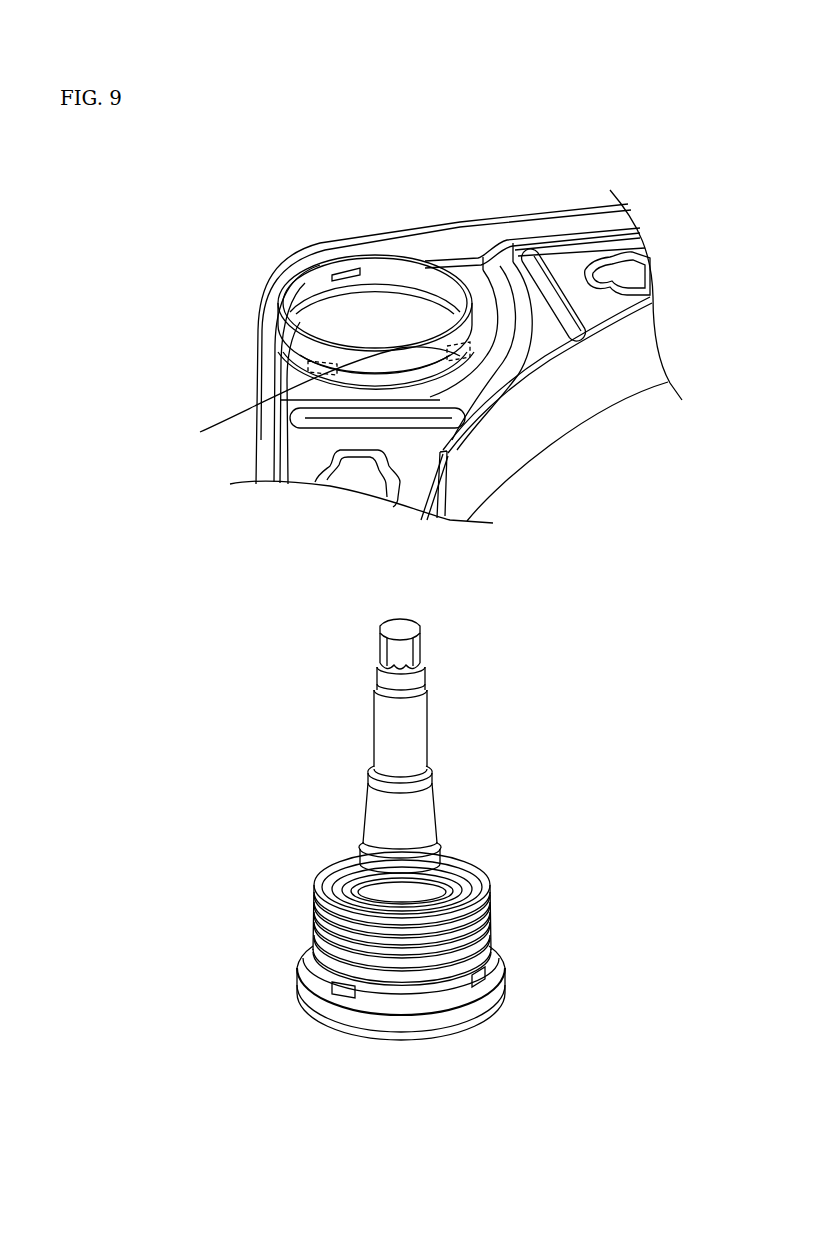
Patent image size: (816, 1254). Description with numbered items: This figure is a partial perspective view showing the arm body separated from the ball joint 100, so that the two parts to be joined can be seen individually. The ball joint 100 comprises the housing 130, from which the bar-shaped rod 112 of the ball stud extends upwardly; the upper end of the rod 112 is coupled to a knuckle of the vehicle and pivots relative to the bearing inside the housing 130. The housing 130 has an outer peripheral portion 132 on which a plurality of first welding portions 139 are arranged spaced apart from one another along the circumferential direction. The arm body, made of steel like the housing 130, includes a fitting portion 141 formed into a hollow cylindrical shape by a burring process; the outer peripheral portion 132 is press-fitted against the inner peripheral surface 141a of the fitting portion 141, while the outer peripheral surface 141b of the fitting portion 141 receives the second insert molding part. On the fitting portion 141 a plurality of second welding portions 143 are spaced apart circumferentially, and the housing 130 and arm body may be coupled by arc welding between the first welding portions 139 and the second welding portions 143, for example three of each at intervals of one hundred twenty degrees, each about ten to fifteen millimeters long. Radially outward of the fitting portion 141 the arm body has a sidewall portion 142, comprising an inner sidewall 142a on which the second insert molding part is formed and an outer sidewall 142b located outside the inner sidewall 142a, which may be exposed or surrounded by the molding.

The ball joint assembly 100 is at (532, 742).
The rod 112 is at (413, 727).
The housing 130 is at (500, 903).
The outer peripheral portion 132 is at (433, 1000).
The first welding portion 139 is at (340, 992).
The fitting portion 141 is at (320, 318).
The inner peripheral surface 141a is at (373, 268).
The outer peripheral surface 141b is at (430, 368).
The sidewall portion 142 is at (521, 206).
The inner sidewall 142a is at (580, 222).
The outer sidewall 142b is at (602, 393).
The second welding portion 143 is at (340, 272).